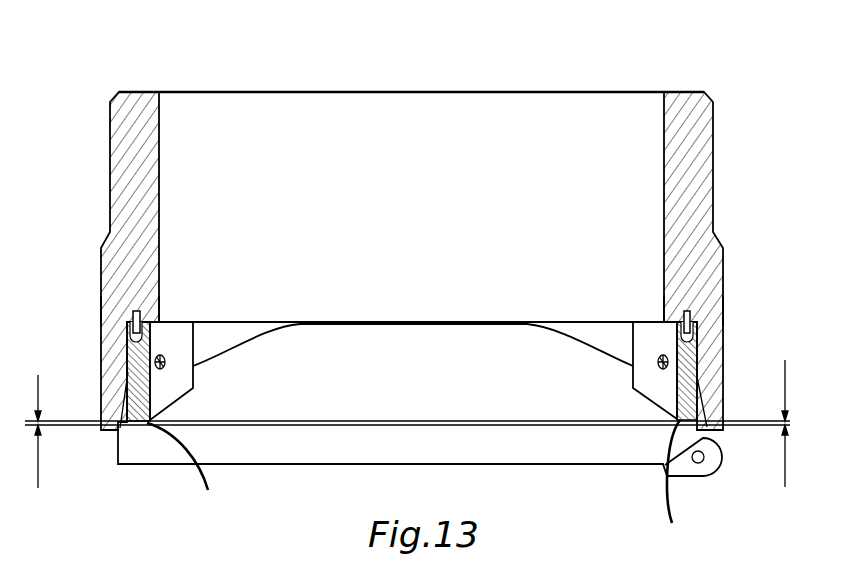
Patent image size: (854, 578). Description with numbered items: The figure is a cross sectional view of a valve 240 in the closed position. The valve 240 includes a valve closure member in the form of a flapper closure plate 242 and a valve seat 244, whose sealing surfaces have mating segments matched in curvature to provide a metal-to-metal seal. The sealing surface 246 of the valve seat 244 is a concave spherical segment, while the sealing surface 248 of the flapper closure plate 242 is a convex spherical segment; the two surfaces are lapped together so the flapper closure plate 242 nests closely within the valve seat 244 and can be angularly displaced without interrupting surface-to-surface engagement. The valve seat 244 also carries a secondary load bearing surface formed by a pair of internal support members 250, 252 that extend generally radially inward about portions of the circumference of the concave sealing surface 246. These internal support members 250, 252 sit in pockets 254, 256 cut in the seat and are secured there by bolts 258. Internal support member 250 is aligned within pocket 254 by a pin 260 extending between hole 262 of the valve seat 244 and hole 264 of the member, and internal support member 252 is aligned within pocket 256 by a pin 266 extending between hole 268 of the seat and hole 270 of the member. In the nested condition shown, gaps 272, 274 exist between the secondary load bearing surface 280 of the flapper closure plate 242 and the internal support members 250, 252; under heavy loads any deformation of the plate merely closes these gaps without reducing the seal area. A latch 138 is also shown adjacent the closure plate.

The valve 240 is at (412, 227).
The valve seat 244 is at (133, 100).
The pin 266 is at (110, 314).
The hole 268 is at (164, 314).
The internal support member 252 is at (185, 332).
The internal support member 250 is at (640, 332).
The hole 262 is at (665, 318).
The pin 260 is at (713, 308).
The pocket 256 is at (133, 322).
The hole 270 is at (130, 345).
The pocket 254 is at (694, 323).
The hole 264 is at (699, 345).
The bolt 258 is at (165, 362).
The sealing surface 246 is at (700, 405).
The gap 274 is at (41, 443).
The gap 272 is at (789, 436).
The sealing surface 248 is at (120, 428).
The secondary load bearing surface 280 is at (413, 486).
The flapper closure plate 242 is at (575, 455).
The latch 138 is at (698, 477).